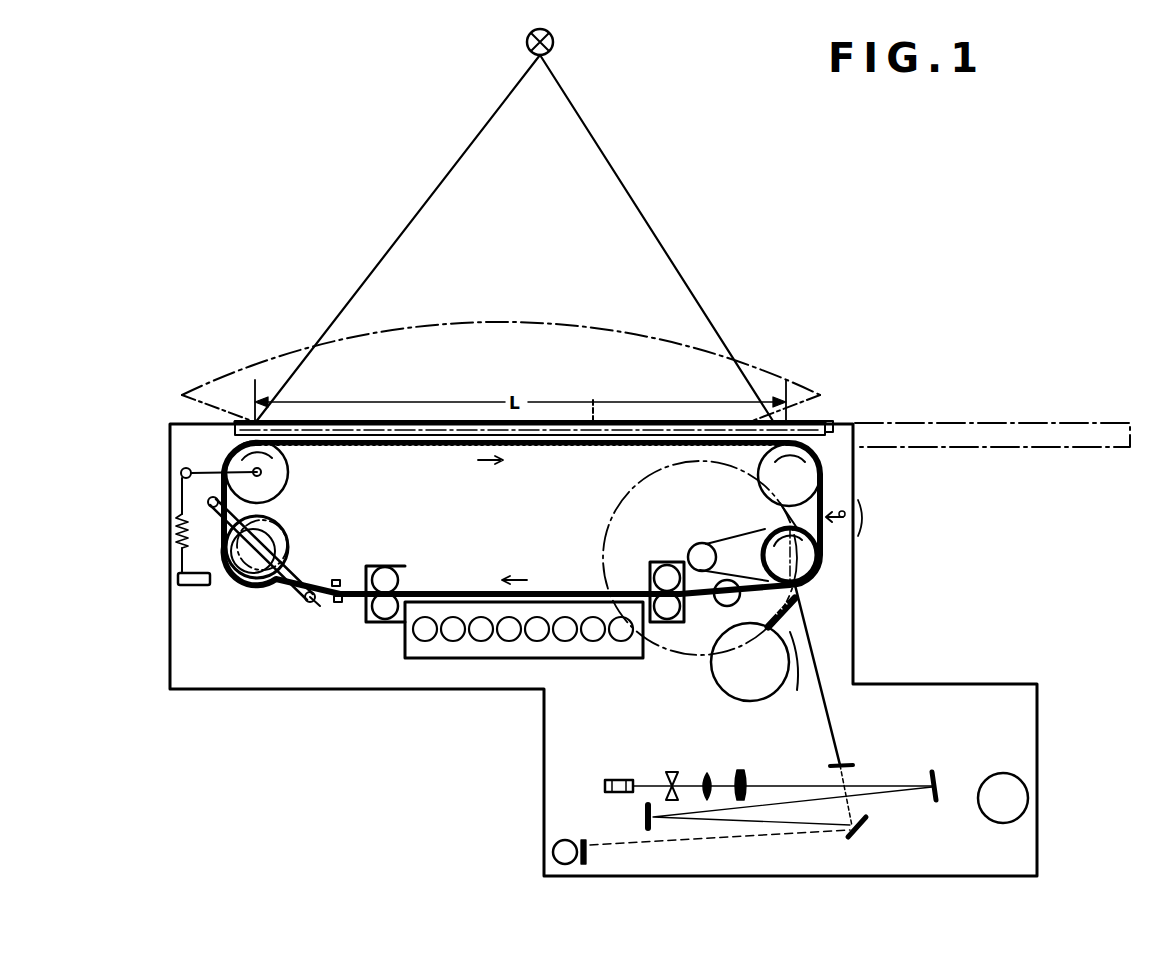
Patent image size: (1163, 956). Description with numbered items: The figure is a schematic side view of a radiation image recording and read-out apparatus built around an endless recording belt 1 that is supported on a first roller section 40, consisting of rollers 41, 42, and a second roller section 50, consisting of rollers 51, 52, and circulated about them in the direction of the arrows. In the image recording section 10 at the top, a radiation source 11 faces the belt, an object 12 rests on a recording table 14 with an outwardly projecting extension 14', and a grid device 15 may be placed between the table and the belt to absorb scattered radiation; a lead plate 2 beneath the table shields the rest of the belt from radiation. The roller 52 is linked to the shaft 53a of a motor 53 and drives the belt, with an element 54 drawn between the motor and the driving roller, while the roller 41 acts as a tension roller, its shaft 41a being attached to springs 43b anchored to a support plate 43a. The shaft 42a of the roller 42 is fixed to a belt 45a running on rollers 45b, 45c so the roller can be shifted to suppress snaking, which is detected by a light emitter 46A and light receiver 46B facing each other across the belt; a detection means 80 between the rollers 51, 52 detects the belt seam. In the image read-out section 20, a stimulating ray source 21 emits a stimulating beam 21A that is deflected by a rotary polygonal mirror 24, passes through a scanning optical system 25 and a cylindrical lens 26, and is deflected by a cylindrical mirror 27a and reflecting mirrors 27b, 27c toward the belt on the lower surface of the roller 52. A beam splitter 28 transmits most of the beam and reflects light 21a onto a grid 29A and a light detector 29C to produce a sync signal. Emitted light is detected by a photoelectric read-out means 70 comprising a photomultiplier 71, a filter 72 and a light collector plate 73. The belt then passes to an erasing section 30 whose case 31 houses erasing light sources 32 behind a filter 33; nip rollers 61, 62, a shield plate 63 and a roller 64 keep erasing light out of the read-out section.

The recording belt 1 is at (425, 440).
The lead plate 2 is at (410, 445).
The image recording section 10 is at (718, 300).
The radiation source 11 is at (553, 42).
The object 12 is at (518, 324).
The recording table 14 is at (852, 411).
The outwardly projecting extension 14' is at (992, 418).
The grid device 15 is at (593, 402).
The image read-out section 20 is at (840, 603).
The stimulating ray source 21 is at (1028, 796).
The stimulating beam 21A is at (820, 664).
The reflected light 21a is at (745, 837).
The rotary polygonal mirror 24 is at (616, 778).
The scanning optical system 25 is at (712, 757).
The cylindrical lens 26 is at (742, 770).
The cylindrical mirror 27a is at (938, 772).
The reflecting mirror 27b is at (645, 814).
The reflecting mirror 27c is at (865, 822).
The beam splitter 28 is at (842, 762).
The grid 29A is at (588, 855).
The light detector 29C is at (553, 852).
The erasing section 30 is at (507, 663).
The case 31 is at (558, 659).
The erasing light sources 32 is at (408, 636).
The filter 33 is at (455, 590).
The first roller section 40 is at (278, 506).
The roller 41 is at (288, 470).
The shaft 41a is at (257, 472).
The roller 42 is at (270, 530).
The shaft 42a is at (288, 548).
The support plate 43a is at (178, 580).
The springs 43b is at (180, 533).
The belt 45a is at (300, 592).
The roller 45b is at (208, 500).
The roller 45c is at (312, 605).
The light emitter 46A is at (338, 604).
The light receiver 46B is at (340, 582).
The second roller section 50 is at (740, 513).
The roller 51 is at (760, 478).
The roller 52 is at (770, 524).
The motor 53 is at (610, 512).
The shaft 53a is at (694, 548).
The guide plate 54 is at (734, 555).
The nip rollers 61 is at (394, 584).
The nip rollers 62 is at (655, 578).
The shield plate 63 is at (366, 614).
The roller 64 is at (717, 603).
The photoelectric read-out means 70 is at (743, 647).
The photomultiplier 71 is at (722, 684).
The filter 72 is at (798, 670).
The light collector plate 73 is at (800, 600).
The detection means 80 is at (861, 518).